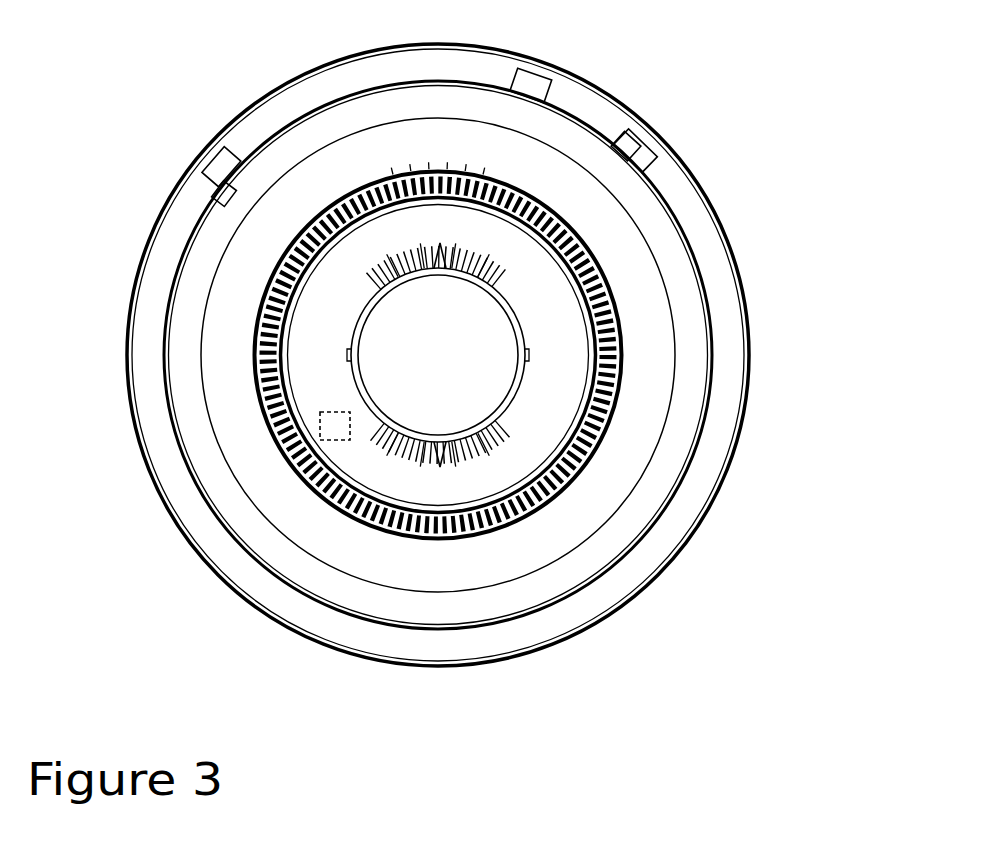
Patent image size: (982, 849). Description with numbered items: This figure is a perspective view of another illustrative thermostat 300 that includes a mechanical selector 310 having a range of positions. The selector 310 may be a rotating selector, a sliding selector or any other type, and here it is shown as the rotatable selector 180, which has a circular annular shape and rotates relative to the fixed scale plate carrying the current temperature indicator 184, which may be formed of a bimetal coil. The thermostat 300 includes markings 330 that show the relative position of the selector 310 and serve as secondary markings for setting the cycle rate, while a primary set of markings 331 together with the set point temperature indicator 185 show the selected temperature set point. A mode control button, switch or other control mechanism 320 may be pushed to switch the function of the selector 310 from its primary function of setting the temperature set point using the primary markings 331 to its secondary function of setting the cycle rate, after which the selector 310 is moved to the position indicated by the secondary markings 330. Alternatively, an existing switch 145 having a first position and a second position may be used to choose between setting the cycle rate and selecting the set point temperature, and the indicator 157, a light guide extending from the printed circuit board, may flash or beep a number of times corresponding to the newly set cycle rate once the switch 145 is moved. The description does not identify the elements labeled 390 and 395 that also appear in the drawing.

The thermostat 300 is at (700, 92).
The face plate 390 is at (657, 355).
The light guide 157 is at (530, 80).
The switch 145 is at (205, 160).
The outer edge of ring 395 is at (600, 268).
The mechanical selector 310 is at (603, 300).
The rotatable selector 180 is at (587, 477).
The markings 330 is at (440, 142).
The primary set of markings 331 is at (487, 223).
The current temperature indicator 184 is at (520, 400).
The set point temperature indicator 185 is at (437, 266).
The mode control button, switch or other control mechanism 320 is at (328, 440).